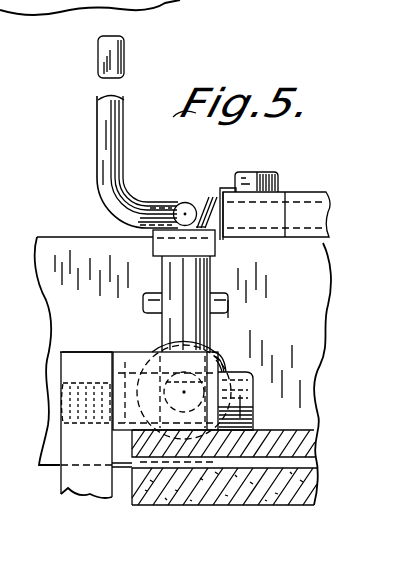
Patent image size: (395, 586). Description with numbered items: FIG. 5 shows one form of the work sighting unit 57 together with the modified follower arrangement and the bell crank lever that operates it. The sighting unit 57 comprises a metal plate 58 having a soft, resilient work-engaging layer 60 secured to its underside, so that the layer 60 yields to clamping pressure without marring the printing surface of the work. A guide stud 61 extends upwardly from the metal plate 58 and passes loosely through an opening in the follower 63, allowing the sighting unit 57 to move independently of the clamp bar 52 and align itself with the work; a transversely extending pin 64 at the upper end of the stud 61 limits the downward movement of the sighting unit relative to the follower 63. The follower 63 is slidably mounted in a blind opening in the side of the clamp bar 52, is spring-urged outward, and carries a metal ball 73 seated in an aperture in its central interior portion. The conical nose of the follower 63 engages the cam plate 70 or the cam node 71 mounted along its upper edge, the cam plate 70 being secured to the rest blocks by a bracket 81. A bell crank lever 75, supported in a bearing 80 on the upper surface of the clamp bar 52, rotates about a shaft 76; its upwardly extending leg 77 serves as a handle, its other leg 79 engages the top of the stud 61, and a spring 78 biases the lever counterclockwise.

The clamp bar 52 is at (50, 250).
The sighting unit 57 is at (226, 514).
The metal plate 58 is at (314, 442).
The work-engaging layer 60 is at (158, 506).
The guide stud 61 is at (200, 276).
The follower 63 is at (228, 360).
The transversely extending pin 64 is at (229, 303).
The cam plate 70 is at (122, 356).
The cam node 71 is at (102, 352).
The metal ball 73 is at (156, 360).
The bell crank lever 75 is at (84, 160).
The shaft 76 is at (164, 210).
The leg 77 is at (100, 62).
The spring 78 is at (214, 200).
The other leg 79 is at (186, 211).
The bearing 80 is at (276, 197).
The bracket 81 is at (72, 483).